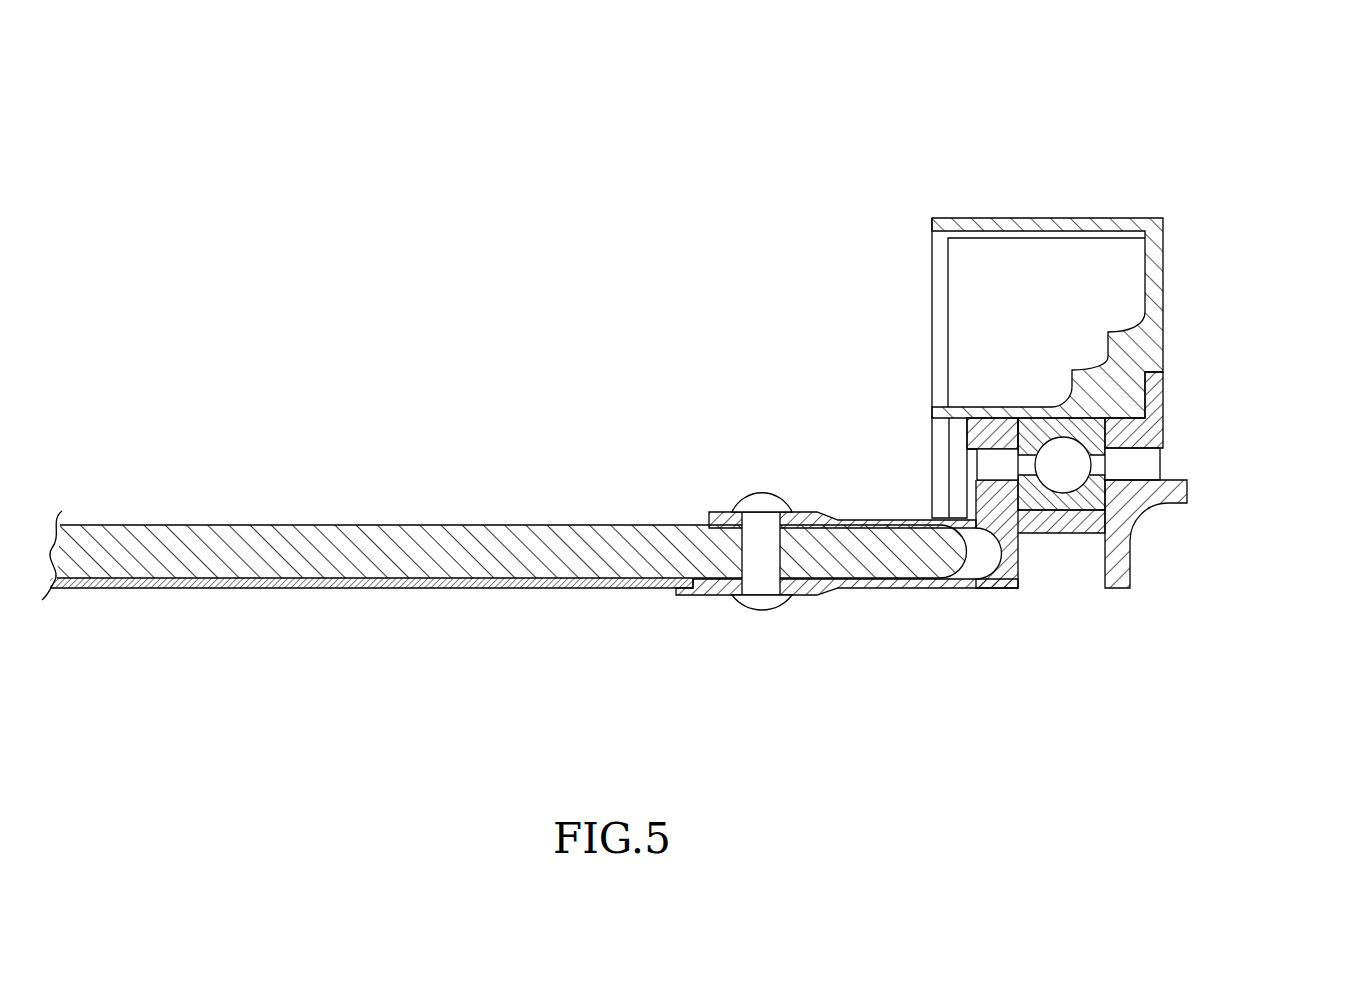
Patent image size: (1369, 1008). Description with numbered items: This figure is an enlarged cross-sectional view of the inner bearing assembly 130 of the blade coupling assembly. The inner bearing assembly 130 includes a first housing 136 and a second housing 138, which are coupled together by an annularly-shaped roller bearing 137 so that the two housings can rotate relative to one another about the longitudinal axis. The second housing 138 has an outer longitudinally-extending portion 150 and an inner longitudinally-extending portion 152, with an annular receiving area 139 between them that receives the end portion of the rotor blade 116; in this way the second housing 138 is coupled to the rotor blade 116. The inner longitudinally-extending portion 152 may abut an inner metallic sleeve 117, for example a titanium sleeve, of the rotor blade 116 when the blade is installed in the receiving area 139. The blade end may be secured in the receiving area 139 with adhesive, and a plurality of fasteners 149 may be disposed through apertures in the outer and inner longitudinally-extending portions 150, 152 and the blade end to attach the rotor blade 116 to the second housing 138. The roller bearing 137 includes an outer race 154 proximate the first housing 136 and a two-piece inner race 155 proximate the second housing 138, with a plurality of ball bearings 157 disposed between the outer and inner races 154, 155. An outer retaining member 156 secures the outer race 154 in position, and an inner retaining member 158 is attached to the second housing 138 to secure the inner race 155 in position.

The rotor blade 116 is at (295, 525).
The inner metallic sleeve 117 is at (340, 590).
The inner bearing assembly 130 is at (590, 168).
The first housing 136 is at (1085, 216).
The annularly-shaped roller bearing 137 is at (1228, 420).
The second housing 138 is at (975, 588).
The annular receiving area 139 is at (850, 548).
The fasteners 149 is at (761, 492).
The outer longitudinally-extending portion 150 is at (708, 513).
The inner longitudinally-extending portion 152 is at (712, 600).
The outer race 154 is at (968, 438).
The two-piece inner race 155 is at (1018, 484).
The outer retaining member 156 is at (1163, 408).
The ball bearings 157 is at (1065, 464).
The inner retaining member 158 is at (1170, 505).